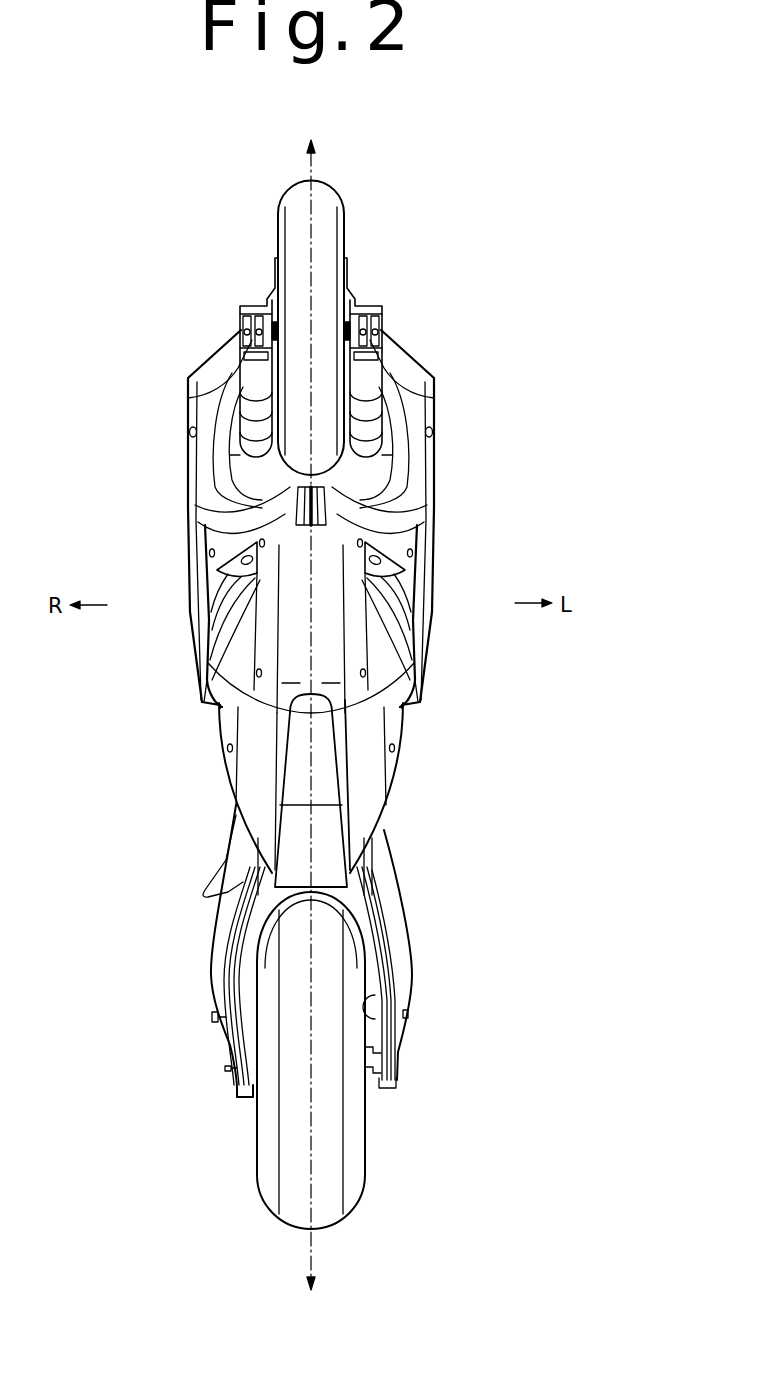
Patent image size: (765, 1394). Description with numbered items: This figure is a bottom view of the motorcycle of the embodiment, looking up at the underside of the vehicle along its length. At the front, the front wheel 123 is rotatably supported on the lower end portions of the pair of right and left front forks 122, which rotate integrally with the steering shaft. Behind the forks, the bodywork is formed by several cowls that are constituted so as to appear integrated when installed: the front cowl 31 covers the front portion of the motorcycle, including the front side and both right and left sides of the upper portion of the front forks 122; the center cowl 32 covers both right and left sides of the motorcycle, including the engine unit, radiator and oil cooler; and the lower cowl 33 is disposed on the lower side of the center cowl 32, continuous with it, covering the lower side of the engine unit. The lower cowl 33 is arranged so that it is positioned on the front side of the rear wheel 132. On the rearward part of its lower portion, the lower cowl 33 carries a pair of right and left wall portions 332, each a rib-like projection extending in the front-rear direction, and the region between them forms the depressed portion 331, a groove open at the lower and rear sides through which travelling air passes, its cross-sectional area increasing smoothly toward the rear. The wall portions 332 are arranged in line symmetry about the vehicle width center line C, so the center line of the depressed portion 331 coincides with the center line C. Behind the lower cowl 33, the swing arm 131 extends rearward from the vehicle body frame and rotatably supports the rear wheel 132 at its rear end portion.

The front wheel 123 is at (327, 228).
The front forks 122 is at (243, 398).
The front cowl 31 is at (418, 387).
The center cowl 32 is at (432, 457).
The lower cowl 33 is at (367, 778).
The wall portions 332 is at (282, 745).
The depressed portion 331 is at (297, 774).
The swing arm 131 is at (395, 1053).
The rear wheel 132 is at (357, 1160).
The vehicle width center line C is at (316, 1245).